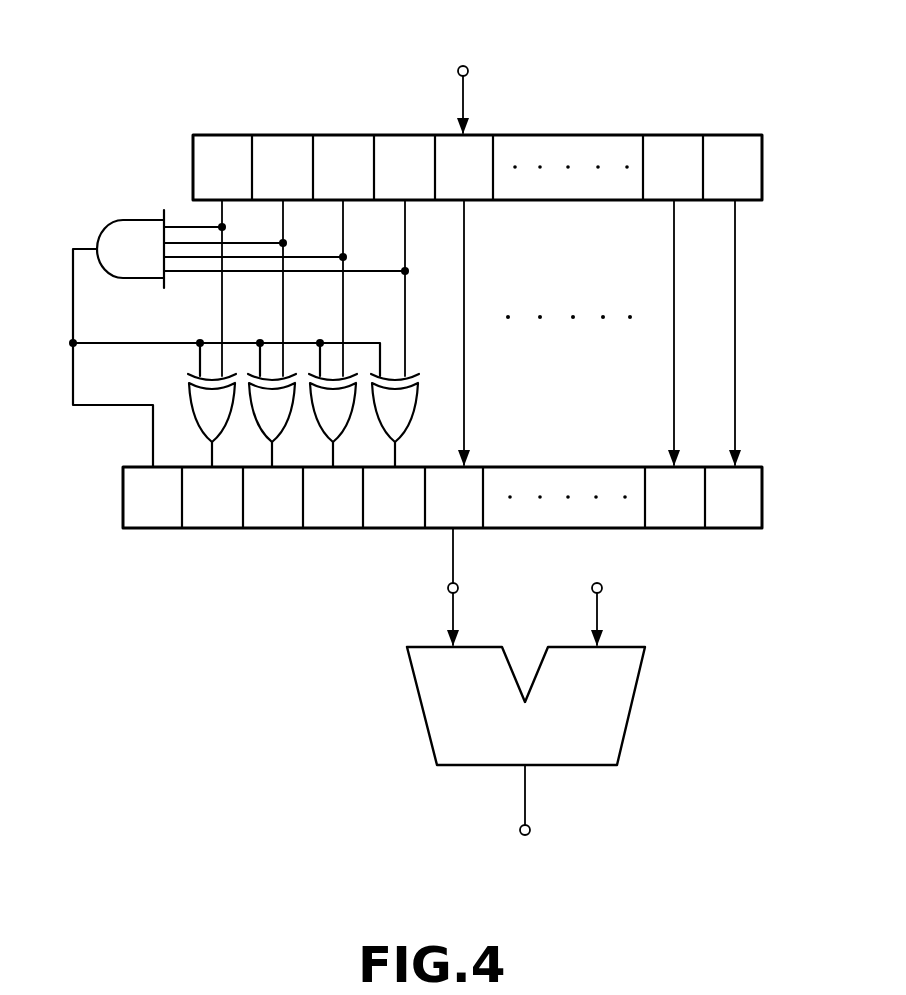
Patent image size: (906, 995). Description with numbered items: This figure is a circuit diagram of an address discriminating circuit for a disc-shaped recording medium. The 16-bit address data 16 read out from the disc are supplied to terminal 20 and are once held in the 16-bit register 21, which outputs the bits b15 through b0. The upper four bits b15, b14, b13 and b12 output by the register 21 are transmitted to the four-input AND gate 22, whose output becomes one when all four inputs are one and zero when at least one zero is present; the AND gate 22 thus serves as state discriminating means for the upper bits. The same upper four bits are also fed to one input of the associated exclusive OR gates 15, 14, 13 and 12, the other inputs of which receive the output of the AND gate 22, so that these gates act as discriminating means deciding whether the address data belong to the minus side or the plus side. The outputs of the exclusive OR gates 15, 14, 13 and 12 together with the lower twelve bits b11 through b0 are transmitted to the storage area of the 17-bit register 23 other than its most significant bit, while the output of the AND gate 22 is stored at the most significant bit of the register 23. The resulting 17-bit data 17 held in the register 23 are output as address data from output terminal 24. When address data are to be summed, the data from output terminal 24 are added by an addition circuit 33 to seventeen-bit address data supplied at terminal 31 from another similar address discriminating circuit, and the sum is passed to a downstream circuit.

The terminal 20 is at (468, 68).
The 16-bit address data 16 is at (456, 104).
The 16-bit register 21 is at (748, 150).
The AND gate 22 is at (128, 230).
The exclusive OR gate 15 is at (193, 403).
The exclusive OR gate 14 is at (268, 413).
The exclusive OR gate 13 is at (329, 413).
The exclusive OR gate 12 is at (389, 413).
The 17-bit register 23 is at (740, 528).
The output terminal 24 is at (448, 589).
The 17-bit data 17 is at (446, 619).
The terminal 31 is at (603, 586).
The addition circuit 33 is at (530, 834).